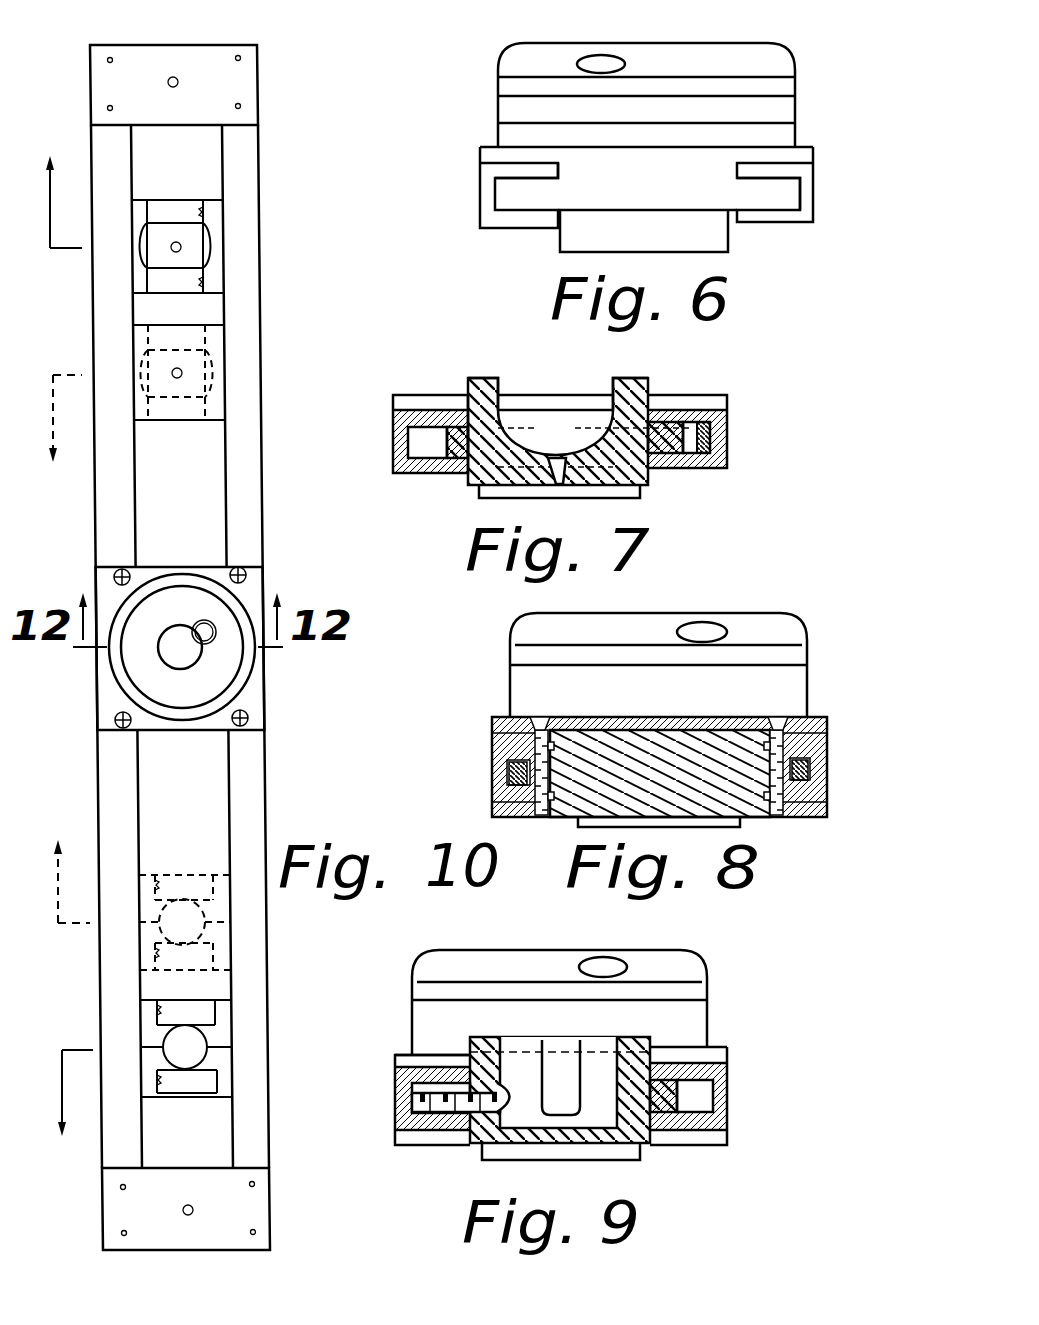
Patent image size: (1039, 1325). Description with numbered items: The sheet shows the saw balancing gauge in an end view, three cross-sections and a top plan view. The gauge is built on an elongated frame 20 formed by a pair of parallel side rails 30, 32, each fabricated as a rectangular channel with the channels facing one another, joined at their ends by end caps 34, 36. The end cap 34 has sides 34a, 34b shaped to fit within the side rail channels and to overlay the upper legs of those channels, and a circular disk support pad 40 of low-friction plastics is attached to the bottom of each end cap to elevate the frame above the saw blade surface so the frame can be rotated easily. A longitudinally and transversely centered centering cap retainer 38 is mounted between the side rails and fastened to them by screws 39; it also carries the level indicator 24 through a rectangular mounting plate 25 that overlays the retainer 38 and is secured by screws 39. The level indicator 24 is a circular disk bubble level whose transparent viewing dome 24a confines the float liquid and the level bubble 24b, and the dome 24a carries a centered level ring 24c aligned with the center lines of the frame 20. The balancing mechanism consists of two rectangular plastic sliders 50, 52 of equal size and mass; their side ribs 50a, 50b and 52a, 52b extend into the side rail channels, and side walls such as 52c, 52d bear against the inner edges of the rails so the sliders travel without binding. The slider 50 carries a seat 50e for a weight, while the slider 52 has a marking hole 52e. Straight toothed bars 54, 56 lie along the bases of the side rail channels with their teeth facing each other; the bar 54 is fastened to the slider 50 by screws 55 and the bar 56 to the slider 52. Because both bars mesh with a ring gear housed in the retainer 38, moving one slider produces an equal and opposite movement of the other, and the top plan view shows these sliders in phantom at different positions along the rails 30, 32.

In FIG. 10, the frame 20 is at (338, 675).
In FIG. 10, the level indicator 24 is at (245, 673).
In FIG. 6, the level indicator 24 is at (793, 110).
In FIG. 8, the level indicator 24 is at (808, 675).
In FIG. 9, the level indicator 24 is at (710, 1017).
In FIG. 10, the viewing dome 24a is at (133, 650).
In FIG. 6, the viewing dome 24a is at (762, 59).
In FIG. 8, the viewing dome 24a is at (797, 617).
In FIG. 9, the viewing dome 24a is at (698, 947).
In FIG. 10, the level bubble 24b is at (200, 627).
In FIG. 6, the level bubble 24b is at (598, 58).
In FIG. 8, the level bubble 24b is at (713, 623).
In FIG. 9, the level bubble 24b is at (607, 962).
In FIG. 10, the level ring 24c is at (173, 670).
In FIG. 10, the mounting plate 25 is at (208, 722).
In FIG. 6, the mounting plate 25 is at (802, 142).
In FIG. 7, the mounting plate 25 is at (555, 402).
In FIG. 8, the mounting plate 25 is at (812, 712).
In FIG. 9, the mounting plate 25 is at (717, 1047).
In FIG. 10, the side rail 30 is at (112, 995).
In FIG. 6, the side rail 30 is at (480, 220).
In FIG. 7, the side rail 30 is at (393, 466).
In FIG. 8, the side rail 30 is at (492, 795).
In FIG. 9, the side rail 30 is at (393, 1107).
In FIG. 10, the side rail 32 is at (255, 925).
In FIG. 6, the side rail 32 is at (813, 217).
In FIG. 7, the side rail 32 is at (727, 463).
In FIG. 8, the side rail 32 is at (828, 795).
In FIG. 9, the side rail 32 is at (727, 1117).
In FIG. 10, the end cap 34 is at (163, 1183).
In FIG. 6, the end cap 34 is at (692, 195).
In FIG. 6, the end cap side 34a is at (508, 197).
In FIG. 6, the end cap side 34b is at (792, 197).
In FIG. 10, the end cap 36 is at (207, 112).
In FIG. 10, the centering cap retainer 38 is at (255, 570).
In FIG. 8, the centering cap retainer 38 is at (588, 782).
In FIG. 10, the screw 39 is at (85, 568).
In FIG. 8, the screw 39 is at (545, 813).
In FIG. 6, the support pad 40 is at (588, 247).
In FIG. 7, the support pad 40 is at (628, 500).
In FIG. 8, the support pad 40 is at (742, 818).
In FIG. 9, the support pad 40 is at (627, 1160).
In FIG. 10, the slider 50 is at (173, 875).
In FIG. 9, the slider 50 is at (463, 1139).
In FIG. 9, the side rib 50a is at (480, 1060).
In FIG. 9, the side rib 50b is at (727, 1095).
In FIG. 9, the seat 50e is at (597, 1060).
In FIG. 10, the slider 52 is at (202, 297).
In FIG. 7, the slider 52 is at (467, 478).
In FIG. 7, the side rib 52a is at (607, 432).
In FIG. 7, the side rib 52b is at (445, 447).
In FIG. 7, the side wall 52c is at (650, 473).
In FIG. 7, the side wall 52d is at (467, 405).
In FIG. 10, the marking hole 52e is at (173, 240).
In FIG. 7, the marking hole 52e is at (560, 458).
In FIG. 7, the toothed bar 54 is at (712, 447).
In FIG. 8, the toothed bar 54 is at (505, 780).
In FIG. 9, the toothed bar 54 is at (415, 1133).
In FIG. 9, the screw 55 is at (505, 1103).
In FIG. 8, the toothed bar 56 is at (812, 773).